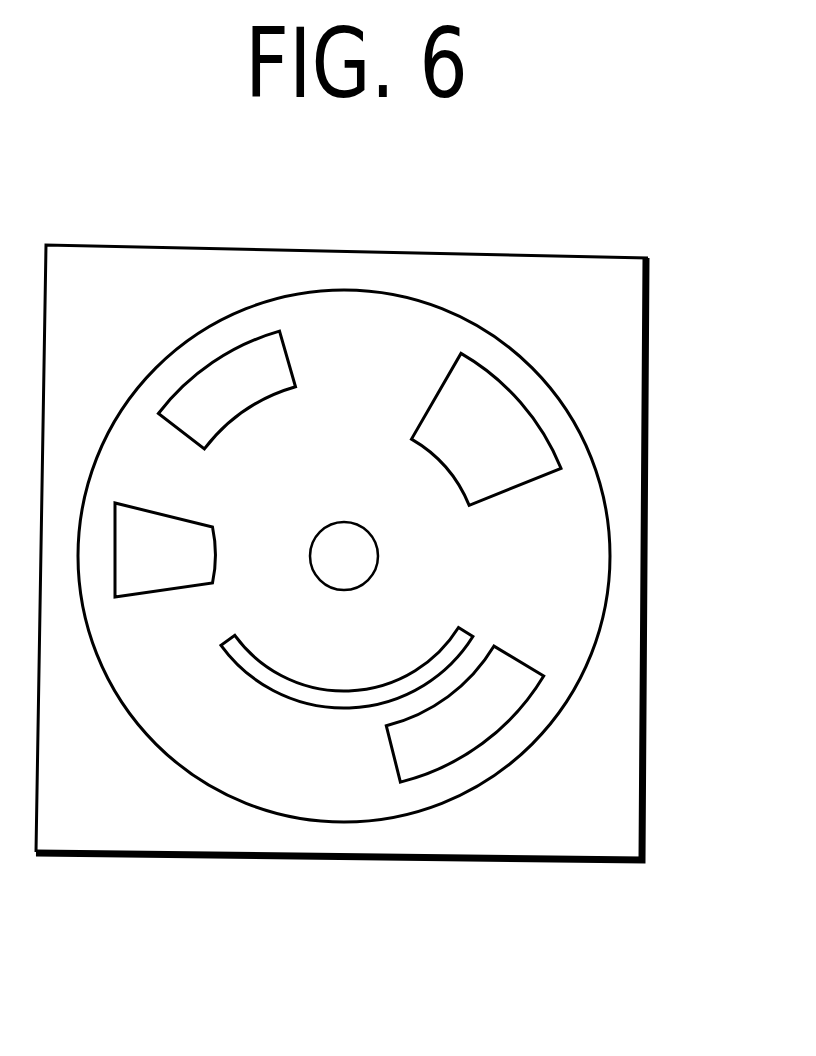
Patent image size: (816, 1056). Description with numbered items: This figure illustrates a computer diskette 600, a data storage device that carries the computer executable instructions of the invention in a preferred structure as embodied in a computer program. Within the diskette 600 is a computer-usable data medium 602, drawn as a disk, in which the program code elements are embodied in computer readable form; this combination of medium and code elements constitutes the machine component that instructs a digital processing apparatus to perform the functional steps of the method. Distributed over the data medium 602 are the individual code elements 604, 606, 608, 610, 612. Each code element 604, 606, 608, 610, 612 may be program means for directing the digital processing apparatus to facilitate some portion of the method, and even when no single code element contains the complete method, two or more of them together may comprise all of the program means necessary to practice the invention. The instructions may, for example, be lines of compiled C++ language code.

The computer diskette 600 is at (558, 324).
The computer-usable data medium 602 is at (497, 588).
The code element 604 is at (447, 454).
The code element 606 is at (220, 390).
The code element 608 is at (122, 575).
The code element 610 is at (332, 698).
The code element 612 is at (477, 710).